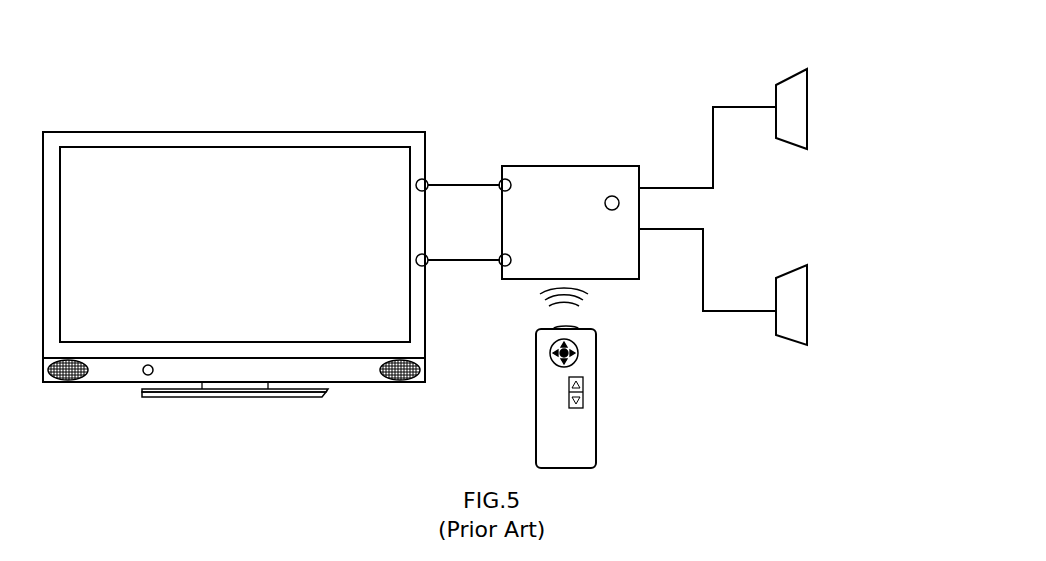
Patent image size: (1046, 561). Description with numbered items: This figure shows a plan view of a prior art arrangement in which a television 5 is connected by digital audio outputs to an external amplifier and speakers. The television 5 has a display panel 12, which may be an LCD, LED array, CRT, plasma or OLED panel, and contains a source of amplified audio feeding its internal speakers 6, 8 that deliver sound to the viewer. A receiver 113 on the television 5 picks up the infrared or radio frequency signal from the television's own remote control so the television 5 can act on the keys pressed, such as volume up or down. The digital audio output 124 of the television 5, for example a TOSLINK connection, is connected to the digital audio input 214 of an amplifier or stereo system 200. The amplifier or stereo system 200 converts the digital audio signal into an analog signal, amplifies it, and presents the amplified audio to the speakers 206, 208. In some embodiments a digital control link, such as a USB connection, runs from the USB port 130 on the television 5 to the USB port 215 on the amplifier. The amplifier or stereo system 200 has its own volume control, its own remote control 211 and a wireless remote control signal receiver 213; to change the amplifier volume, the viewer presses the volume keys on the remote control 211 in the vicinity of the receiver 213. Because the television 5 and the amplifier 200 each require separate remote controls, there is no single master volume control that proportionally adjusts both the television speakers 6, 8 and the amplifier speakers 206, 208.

The television 5 is at (440, 121).
The display panel 12 is at (245, 170).
The internal speaker 6 is at (76, 377).
The internal speaker 8 is at (401, 377).
The receiver 113 is at (146, 377).
The digital audio output 124 is at (426, 181).
The USB port 130 is at (426, 258).
The digital audio input 214 is at (500, 190).
The USB port 215 is at (500, 265).
The amplifier or stereo system 200 is at (545, 166).
The wireless remote control signal receiver 213 is at (610, 196).
The speaker 206 is at (808, 105).
The speaker 208 is at (808, 297).
The remote control 211 is at (596, 431).